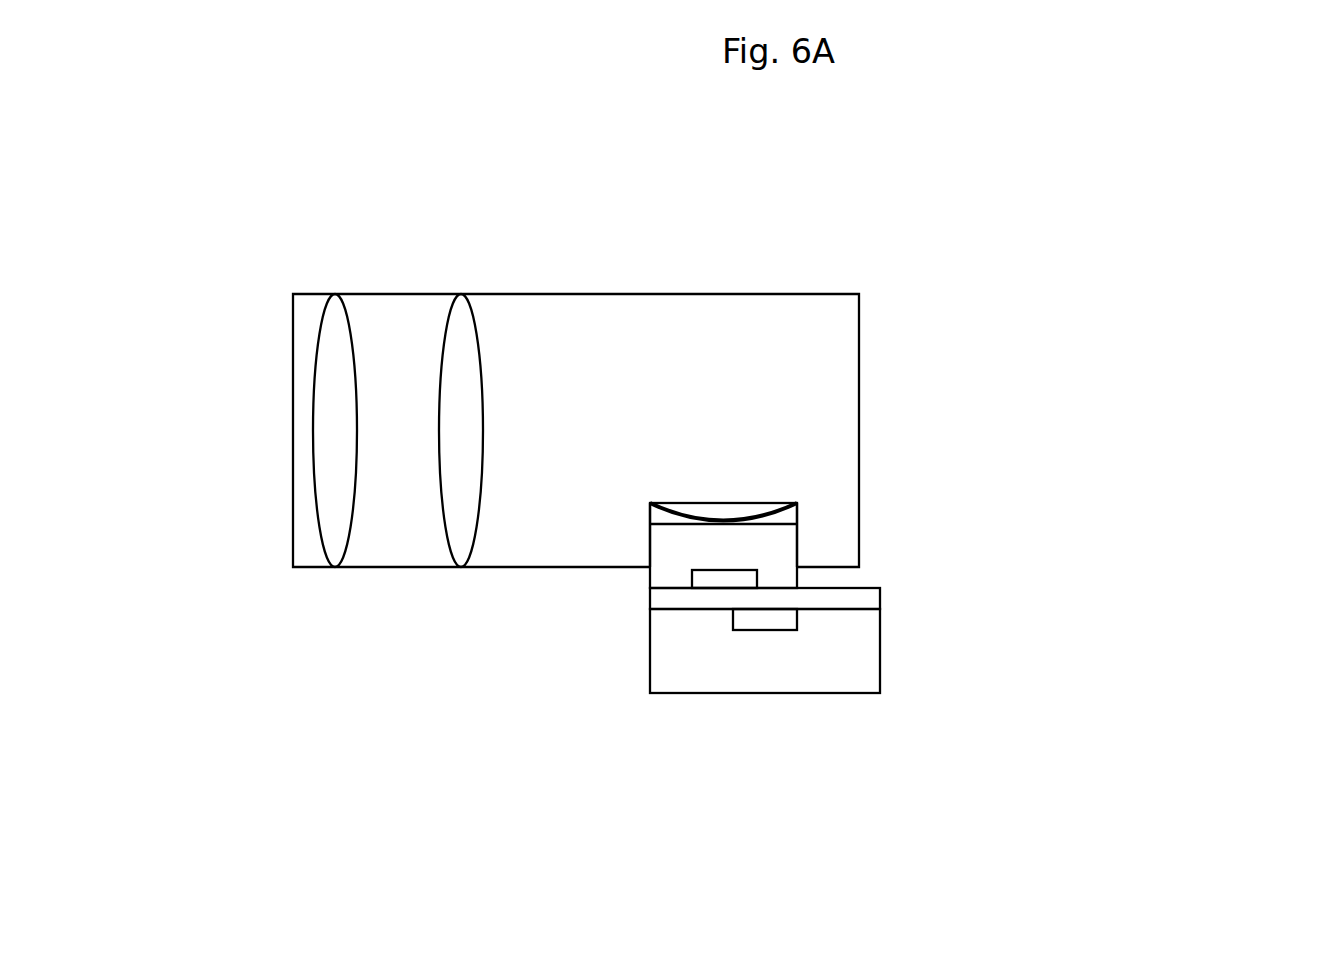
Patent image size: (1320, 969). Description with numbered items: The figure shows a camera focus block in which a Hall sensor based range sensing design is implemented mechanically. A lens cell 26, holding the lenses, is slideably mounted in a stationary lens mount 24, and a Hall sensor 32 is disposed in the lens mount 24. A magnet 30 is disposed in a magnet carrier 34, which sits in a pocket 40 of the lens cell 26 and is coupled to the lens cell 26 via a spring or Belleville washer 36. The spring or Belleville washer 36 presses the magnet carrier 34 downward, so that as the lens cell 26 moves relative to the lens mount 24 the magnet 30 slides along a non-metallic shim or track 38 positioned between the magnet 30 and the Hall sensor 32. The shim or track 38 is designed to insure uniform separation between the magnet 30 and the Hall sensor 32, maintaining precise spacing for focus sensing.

The lens mount 24 is at (833, 691).
The lens cell 26 is at (279, 487).
The magnet 30 is at (771, 576).
The Hall sensor 32 is at (716, 640).
The magnet carrier 34 is at (807, 535).
The spring or Belleville washer 36 is at (693, 508).
The non-metallic shim or track 38 is at (894, 588).
The lens cell pocket 40 is at (630, 554).